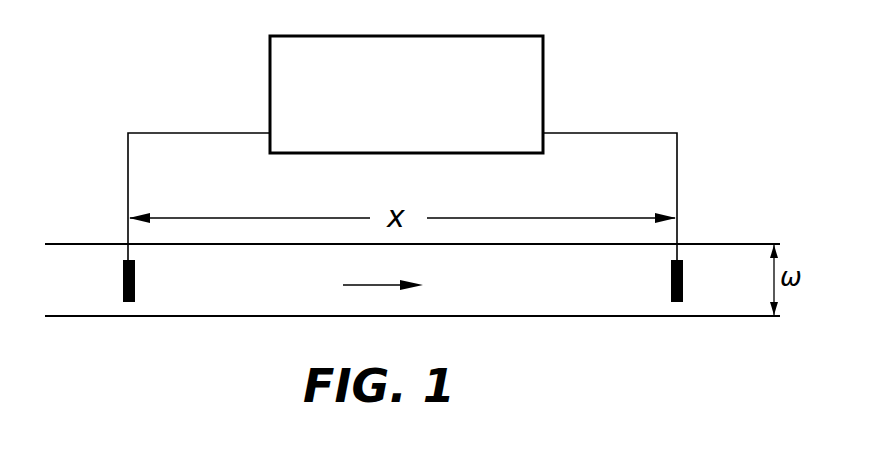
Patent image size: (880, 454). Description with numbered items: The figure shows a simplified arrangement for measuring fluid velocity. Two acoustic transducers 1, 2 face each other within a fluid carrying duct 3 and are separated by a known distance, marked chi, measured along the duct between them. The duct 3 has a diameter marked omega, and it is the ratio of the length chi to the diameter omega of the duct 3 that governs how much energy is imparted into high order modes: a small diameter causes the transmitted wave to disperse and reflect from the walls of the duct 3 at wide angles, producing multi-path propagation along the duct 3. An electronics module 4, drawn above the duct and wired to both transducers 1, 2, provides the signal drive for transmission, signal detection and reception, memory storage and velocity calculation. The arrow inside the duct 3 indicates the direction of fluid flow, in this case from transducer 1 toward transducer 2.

The acoustic transducer 1 is at (122, 290).
The acoustic transducer 2 is at (685, 293).
The fluid carrying duct 3 is at (725, 243).
The electronics module 4 is at (406, 94).